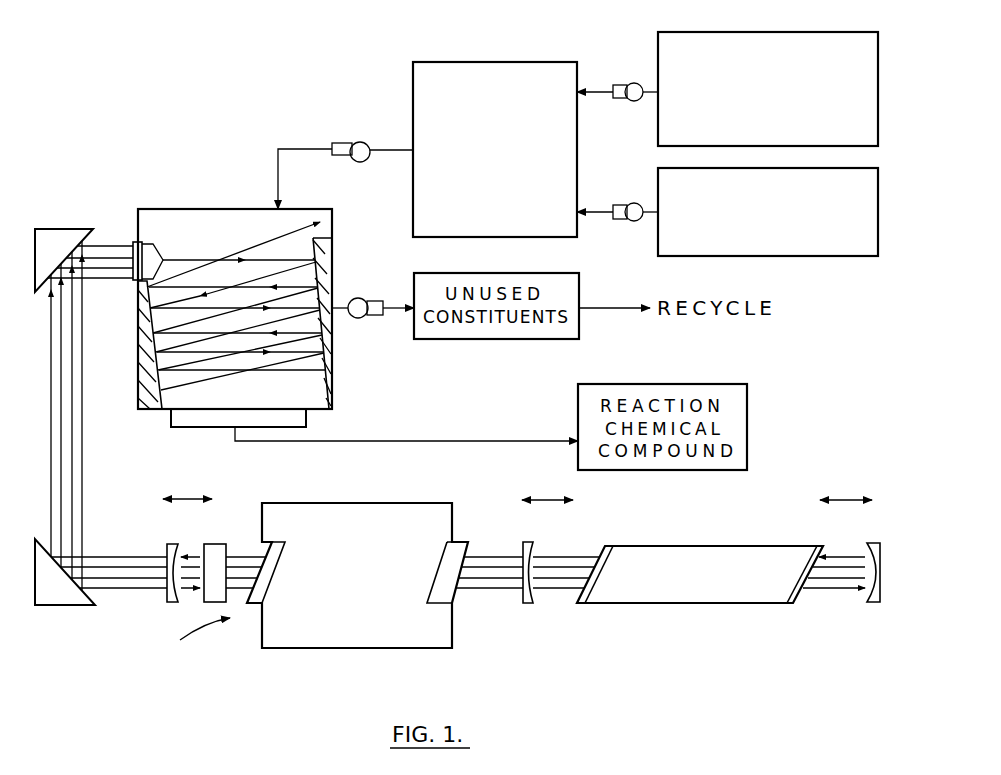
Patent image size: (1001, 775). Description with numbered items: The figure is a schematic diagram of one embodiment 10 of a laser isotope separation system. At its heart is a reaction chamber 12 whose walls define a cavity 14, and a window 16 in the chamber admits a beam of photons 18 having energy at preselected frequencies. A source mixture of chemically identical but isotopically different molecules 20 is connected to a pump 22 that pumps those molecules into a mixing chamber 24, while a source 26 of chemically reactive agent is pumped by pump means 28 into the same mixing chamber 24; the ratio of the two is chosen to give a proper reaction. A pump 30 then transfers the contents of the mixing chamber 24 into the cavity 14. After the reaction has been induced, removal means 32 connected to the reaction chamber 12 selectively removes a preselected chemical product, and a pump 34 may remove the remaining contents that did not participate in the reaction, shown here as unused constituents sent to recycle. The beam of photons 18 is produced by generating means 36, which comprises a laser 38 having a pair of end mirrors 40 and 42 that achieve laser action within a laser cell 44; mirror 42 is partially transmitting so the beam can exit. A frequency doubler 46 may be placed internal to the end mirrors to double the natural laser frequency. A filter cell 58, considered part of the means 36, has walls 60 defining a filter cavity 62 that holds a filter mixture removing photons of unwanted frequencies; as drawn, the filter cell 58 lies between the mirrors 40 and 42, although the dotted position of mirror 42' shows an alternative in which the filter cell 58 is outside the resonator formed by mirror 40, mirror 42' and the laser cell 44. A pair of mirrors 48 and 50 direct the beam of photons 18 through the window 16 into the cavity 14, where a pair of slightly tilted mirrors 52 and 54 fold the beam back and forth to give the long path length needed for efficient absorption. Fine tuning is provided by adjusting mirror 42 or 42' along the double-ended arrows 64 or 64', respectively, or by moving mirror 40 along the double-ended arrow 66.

The embodiment 10 is at (262, 92).
The reaction chamber 12 is at (137, 212).
The cavity 14 is at (316, 211).
The window 16 is at (134, 281).
The beam of photons 18 is at (85, 467).
The source mixture of chemically identical but isotopically different molecules 20 is at (656, 62).
The pump 22 is at (634, 103).
The mixing chamber 24 is at (525, 62).
The source of chemically reactive agent 26 is at (832, 257).
The pump means 28 is at (628, 222).
The pump 30 is at (360, 142).
The removal means 32 is at (205, 428).
The pump 34 is at (356, 319).
The means for generating the beam of photons 36 is at (168, 656).
The laser 38 is at (645, 546).
The laser end mirror 40 is at (870, 602).
The laser end mirror 42 is at (155, 555).
The laser end mirror 42' is at (557, 557).
The laser cell 44 is at (752, 546).
The frequency doubler 46 is at (215, 543).
The mirror 48 is at (58, 606).
The mirror 50 is at (55, 229).
The tilted mirror 52 is at (333, 295).
The tilted mirror 54 is at (140, 348).
The filter cell 58 is at (408, 503).
The walls 60 is at (352, 503).
The filter cavity 62 is at (303, 515).
The double-ended arrow 64 is at (198, 474).
The double-ended arrow 64' is at (543, 479).
The double-ended arrow 66 is at (848, 492).